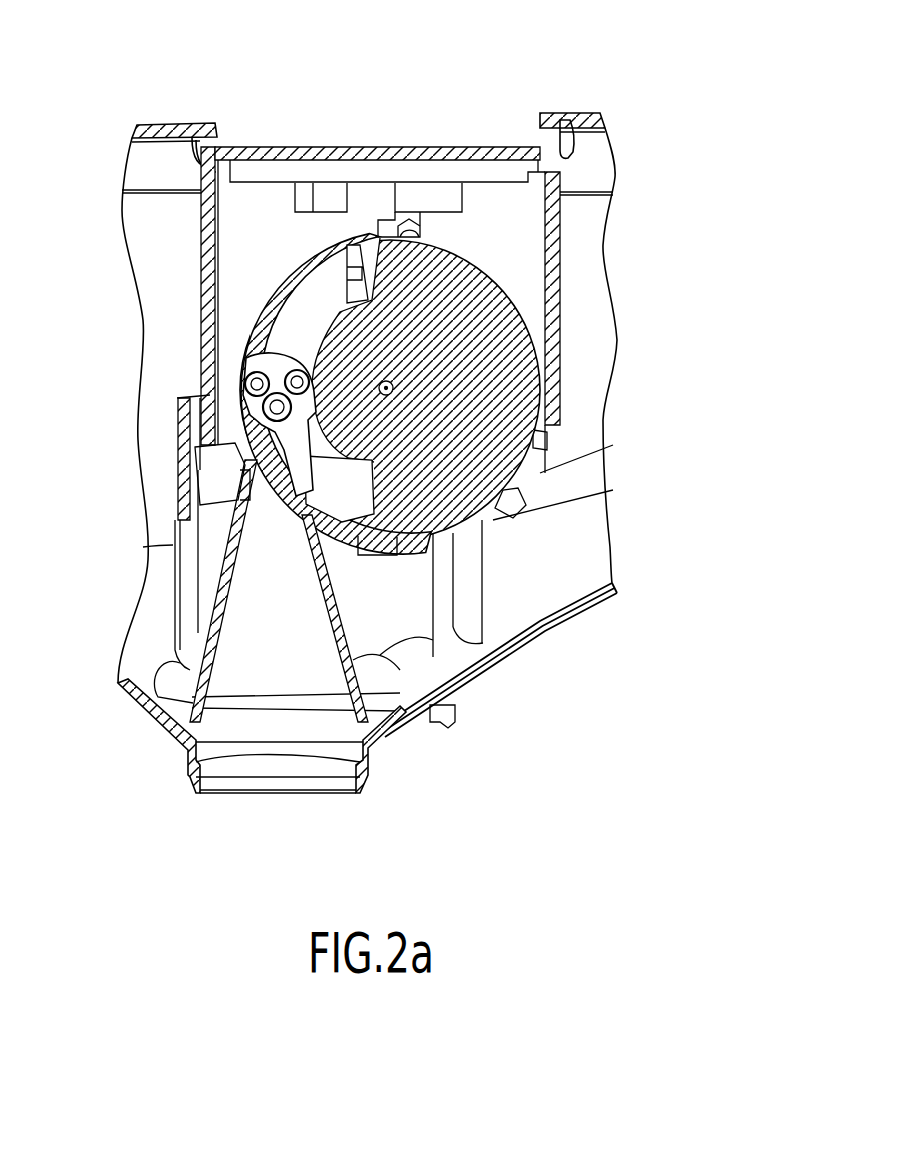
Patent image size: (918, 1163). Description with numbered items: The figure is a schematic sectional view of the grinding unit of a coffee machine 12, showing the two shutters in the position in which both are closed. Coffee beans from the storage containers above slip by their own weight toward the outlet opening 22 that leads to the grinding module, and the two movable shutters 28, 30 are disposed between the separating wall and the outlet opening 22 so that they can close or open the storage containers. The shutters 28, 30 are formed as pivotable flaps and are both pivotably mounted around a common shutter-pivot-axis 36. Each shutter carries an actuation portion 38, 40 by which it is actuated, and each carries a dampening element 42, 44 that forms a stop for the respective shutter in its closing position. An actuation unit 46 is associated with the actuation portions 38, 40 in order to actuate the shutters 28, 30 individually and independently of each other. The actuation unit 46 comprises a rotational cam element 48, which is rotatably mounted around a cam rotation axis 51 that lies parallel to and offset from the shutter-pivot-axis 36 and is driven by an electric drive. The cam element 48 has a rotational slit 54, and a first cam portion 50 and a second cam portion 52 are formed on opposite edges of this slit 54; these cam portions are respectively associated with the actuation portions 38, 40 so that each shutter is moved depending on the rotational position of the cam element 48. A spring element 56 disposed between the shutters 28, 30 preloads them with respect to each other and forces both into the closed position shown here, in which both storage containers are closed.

The coffee machine 12 is at (570, 88).
The outlet opening 22 is at (267, 783).
The shutter 28 is at (212, 611).
The shutter 30 is at (445, 692).
The shutter-pivot-axis 36 is at (276, 408).
The actuation portion 38 is at (301, 370).
The actuation portion 40 is at (253, 378).
The dampening element 42 is at (220, 482).
The dampening element 44 is at (370, 548).
The actuation unit 46 is at (572, 310).
The cam element 48 is at (500, 437).
The first cam portion 50 is at (280, 303).
The cam rotation axis 51 is at (396, 388).
The second cam portion 52 is at (327, 333).
The rotational slit 54 is at (277, 321).
The spring element 56 is at (256, 488).